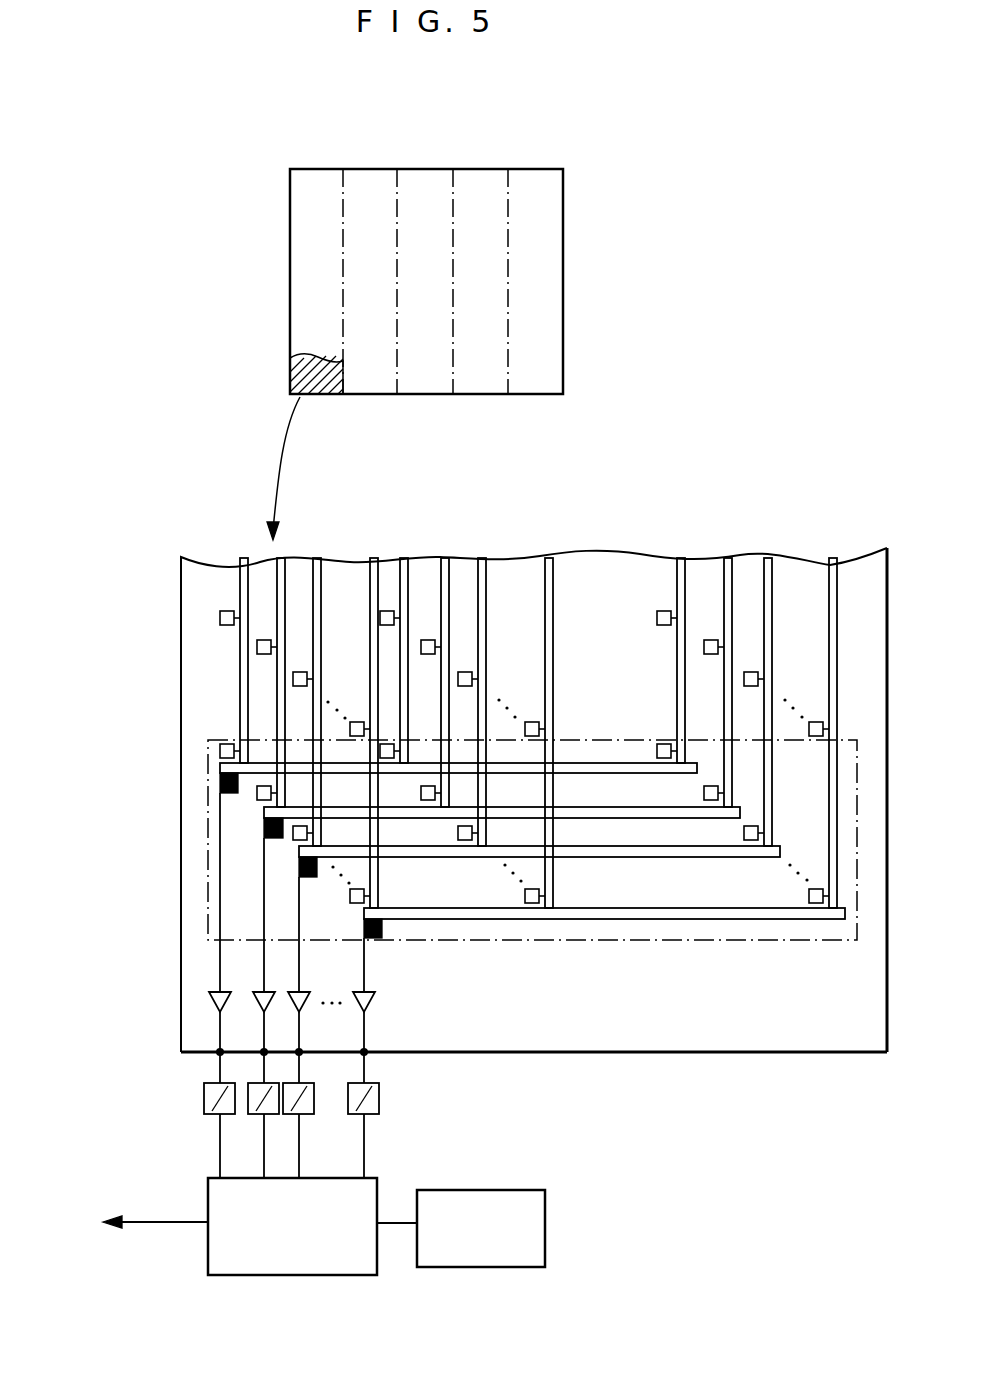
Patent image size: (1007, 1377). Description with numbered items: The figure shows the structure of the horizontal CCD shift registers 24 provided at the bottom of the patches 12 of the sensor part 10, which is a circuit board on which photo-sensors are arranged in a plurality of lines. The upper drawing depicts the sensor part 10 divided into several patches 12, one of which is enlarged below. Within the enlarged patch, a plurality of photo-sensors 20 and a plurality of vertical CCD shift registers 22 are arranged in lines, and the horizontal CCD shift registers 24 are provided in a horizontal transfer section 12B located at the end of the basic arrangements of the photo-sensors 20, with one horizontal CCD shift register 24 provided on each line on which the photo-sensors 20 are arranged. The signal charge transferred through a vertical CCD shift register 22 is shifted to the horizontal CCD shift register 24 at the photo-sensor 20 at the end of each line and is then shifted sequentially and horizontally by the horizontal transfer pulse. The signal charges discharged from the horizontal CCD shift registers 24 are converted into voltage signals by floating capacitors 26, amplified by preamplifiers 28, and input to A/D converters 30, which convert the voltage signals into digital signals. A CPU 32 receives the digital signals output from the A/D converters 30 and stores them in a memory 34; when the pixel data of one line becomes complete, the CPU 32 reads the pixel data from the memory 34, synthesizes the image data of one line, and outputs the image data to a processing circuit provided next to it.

The sensor part 10 is at (574, 270).
The patch 12 is at (310, 178).
The horizontal transfer section 12B is at (596, 752).
The photo-sensor 20 is at (220, 618).
The vertical CCD shift register 22 is at (242, 563).
The horizontal CCD shift register 24 is at (615, 775).
The floating capacitor 26 is at (220, 785).
The preamplifier 28 is at (213, 1002).
The A/D converter 30 is at (204, 1098).
The CPU 32 is at (327, 1277).
The memory 34 is at (500, 1268).